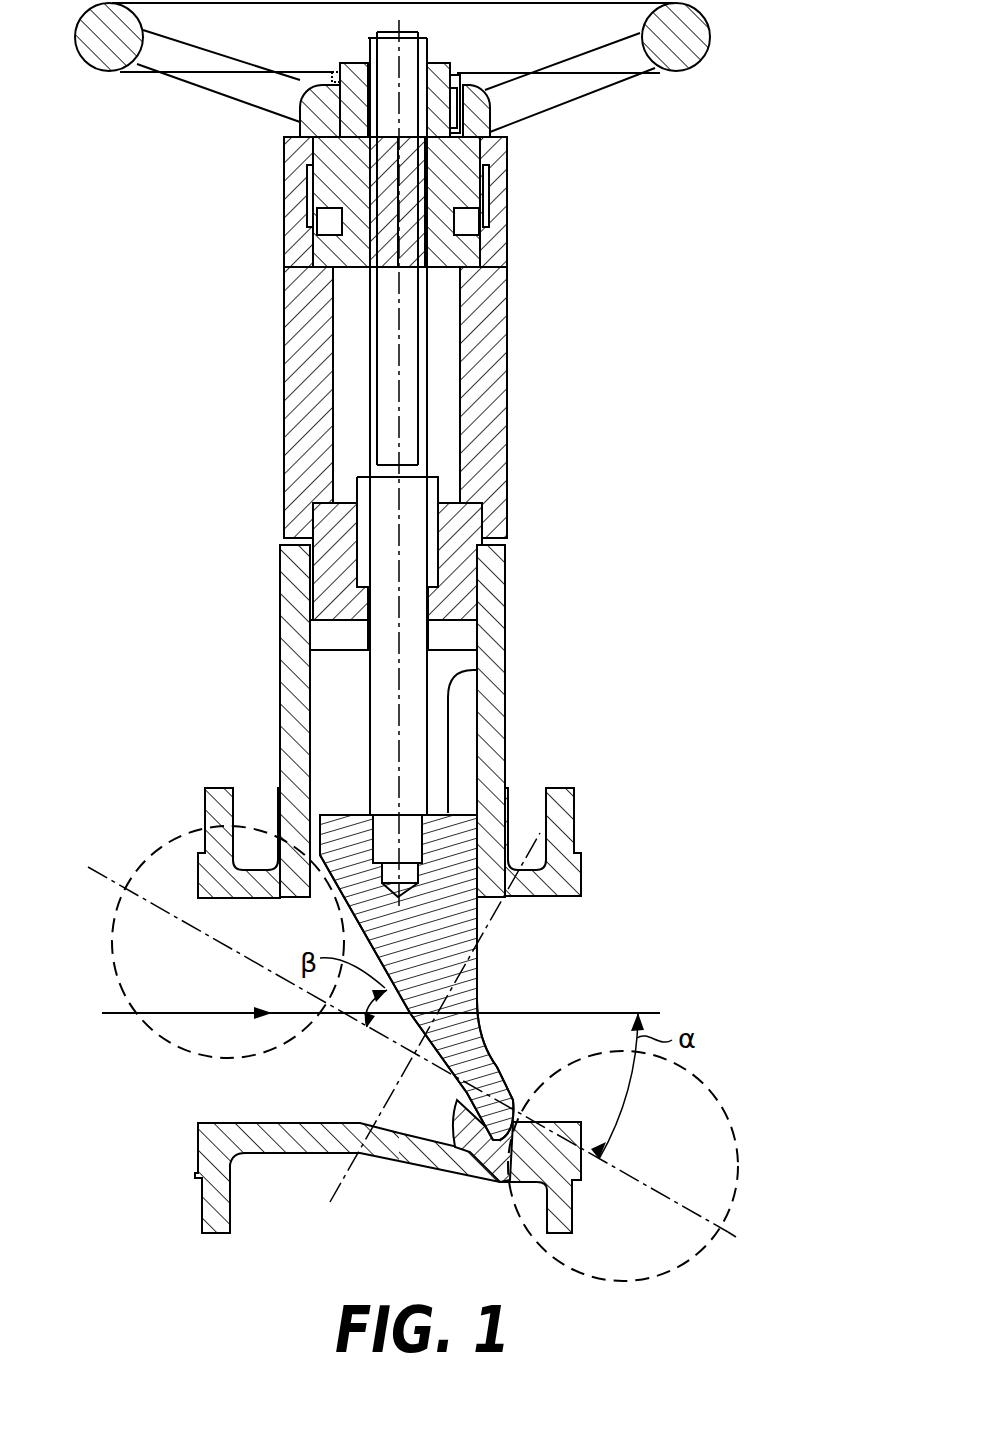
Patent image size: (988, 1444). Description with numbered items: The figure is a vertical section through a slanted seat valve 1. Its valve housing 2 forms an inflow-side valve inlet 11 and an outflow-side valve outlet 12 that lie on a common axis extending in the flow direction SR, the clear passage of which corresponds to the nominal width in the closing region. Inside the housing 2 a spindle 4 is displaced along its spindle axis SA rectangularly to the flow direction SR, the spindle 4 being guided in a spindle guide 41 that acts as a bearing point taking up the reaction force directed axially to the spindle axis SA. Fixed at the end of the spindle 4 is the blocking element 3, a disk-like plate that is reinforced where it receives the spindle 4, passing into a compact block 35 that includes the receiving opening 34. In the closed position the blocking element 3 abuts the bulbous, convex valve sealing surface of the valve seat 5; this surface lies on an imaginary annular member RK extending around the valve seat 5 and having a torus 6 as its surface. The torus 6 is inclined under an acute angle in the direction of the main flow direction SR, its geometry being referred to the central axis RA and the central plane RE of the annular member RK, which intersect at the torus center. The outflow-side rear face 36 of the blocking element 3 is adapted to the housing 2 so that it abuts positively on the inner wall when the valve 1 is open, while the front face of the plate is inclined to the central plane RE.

The slanted seat valve 1 is at (744, 188).
The valve housing 2 is at (495, 752).
The blocking element 3 is at (457, 1147).
The spindle 4 is at (412, 377).
The valve seat 5 is at (290, 822).
The torus 6 is at (708, 1152).
The valve inlet 11 is at (222, 1087).
The valve outlet 12 is at (550, 958).
The receiving opening 34 is at (400, 833).
The compact block 35 is at (443, 913).
The rear face 36 is at (490, 1047).
The spindle guide 41 is at (290, 603).
The spindle axis SA is at (397, 338).
The flow direction SR is at (359, 1012).
The central axis RA is at (415, 1027).
The annular member RK is at (408, 1049).
The central plane RE is at (723, 1227).